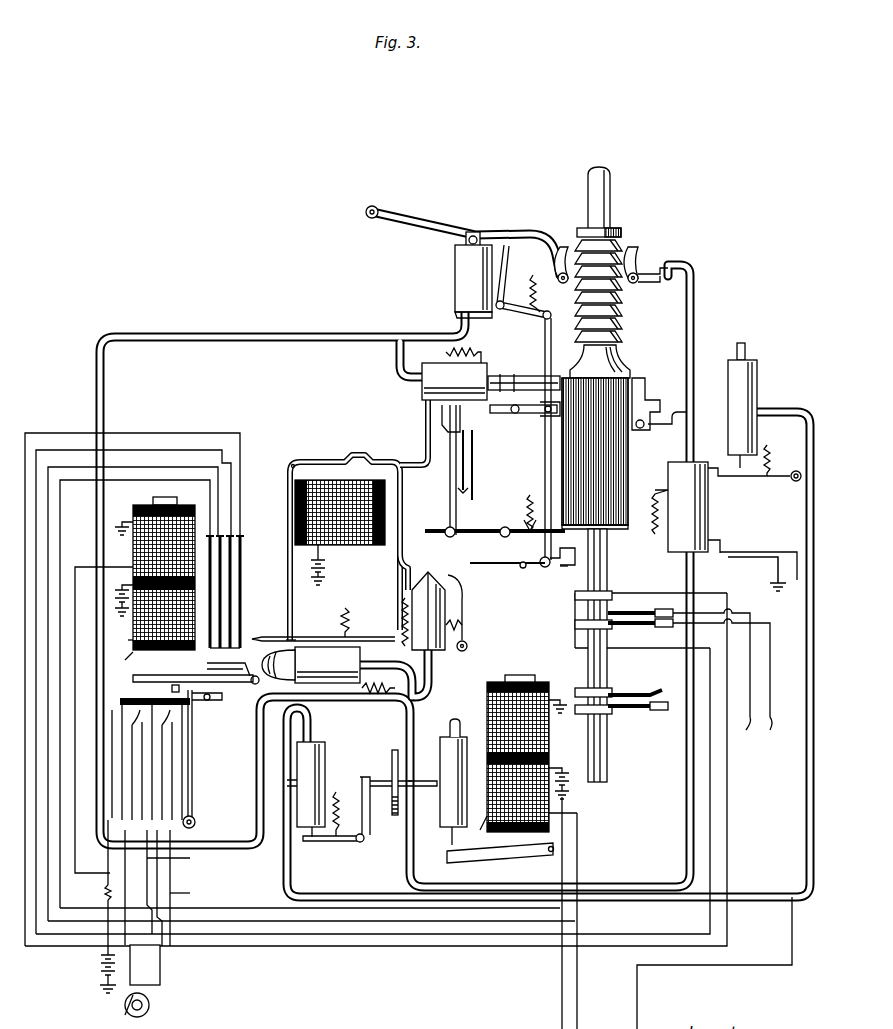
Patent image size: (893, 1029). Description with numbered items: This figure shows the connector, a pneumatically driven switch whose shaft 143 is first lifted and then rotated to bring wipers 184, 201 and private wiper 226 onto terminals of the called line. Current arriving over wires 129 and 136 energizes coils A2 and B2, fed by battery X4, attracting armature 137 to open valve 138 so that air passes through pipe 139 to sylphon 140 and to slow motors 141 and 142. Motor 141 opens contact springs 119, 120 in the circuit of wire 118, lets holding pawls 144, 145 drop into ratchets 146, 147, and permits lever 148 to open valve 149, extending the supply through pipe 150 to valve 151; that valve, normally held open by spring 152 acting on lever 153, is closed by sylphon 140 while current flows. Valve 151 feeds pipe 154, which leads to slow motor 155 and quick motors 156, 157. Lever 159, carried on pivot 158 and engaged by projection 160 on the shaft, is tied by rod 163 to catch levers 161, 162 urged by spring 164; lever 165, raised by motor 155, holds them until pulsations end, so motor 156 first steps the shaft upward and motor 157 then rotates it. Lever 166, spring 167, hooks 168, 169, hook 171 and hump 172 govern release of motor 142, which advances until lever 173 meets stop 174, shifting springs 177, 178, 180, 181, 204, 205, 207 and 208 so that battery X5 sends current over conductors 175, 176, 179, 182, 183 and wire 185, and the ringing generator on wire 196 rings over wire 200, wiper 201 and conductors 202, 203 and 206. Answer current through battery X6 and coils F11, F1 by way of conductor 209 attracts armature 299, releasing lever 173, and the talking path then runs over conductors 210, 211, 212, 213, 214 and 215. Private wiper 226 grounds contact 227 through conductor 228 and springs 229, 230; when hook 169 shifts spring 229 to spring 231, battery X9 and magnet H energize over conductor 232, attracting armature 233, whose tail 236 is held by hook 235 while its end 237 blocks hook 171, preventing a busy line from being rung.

The conductor 118 is at (638, 990).
The contact spring 119 is at (745, 550).
The contact spring 120 is at (758, 560).
The conductor 129 is at (561, 983).
The conductor 136 is at (578, 993).
The armature 137 is at (492, 858).
The valve 138 is at (448, 737).
The pipe 139 is at (414, 786).
The sylphon 140 is at (393, 750).
The slow motor 141 is at (708, 515).
The slow motor 142 is at (345, 672).
The shaft 143 is at (608, 772).
The holding pawl 144 is at (638, 262).
The holding pawl 145 is at (645, 378).
The ratchet 146 is at (620, 310).
The ratchet 147 is at (629, 450).
The lever 148 is at (745, 479).
The valve 149 is at (758, 375).
The pipe 150 is at (780, 897).
The valve 151 is at (326, 752).
The spring 152 is at (280, 778).
The lever 153 is at (372, 825).
The pipe 154 is at (105, 378).
The slow motor 155 is at (465, 625).
The quick motor 156 is at (453, 275).
The quick motor 157 is at (491, 374).
The pivot 158 is at (515, 568).
The lever 159 is at (557, 569).
The projection 160 is at (558, 552).
The catch lever 161 is at (515, 416).
The catch lever 162 is at (520, 315).
The rod 163 is at (544, 470).
The spring 164 is at (532, 290).
The lever 165 is at (452, 600).
The lever 166 is at (515, 519).
The spring 167 is at (516, 511).
The hook 168 is at (448, 430).
The hook 169 is at (440, 413).
The hook 171 is at (323, 624).
The hump 172 is at (399, 563).
The lever 173 is at (193, 721).
The stop 174 is at (217, 667).
The conductor 175 is at (108, 922).
The conductor 176 is at (105, 893).
The contact spring 177 is at (110, 733).
The contact spring 178 is at (150, 693).
The conductor 179 is at (185, 828).
The contact spring 180 is at (175, 808).
The contact spring 181 is at (165, 792).
The conductor 182 is at (185, 860).
The conductor 183 is at (200, 450).
The wiper 184 is at (636, 624).
The wire 185 is at (748, 728).
The wire 196 is at (162, 985).
The wire 200 is at (757, 748).
The wiper 201 is at (628, 588).
The conductor 202 is at (242, 438).
The conductor 203 is at (178, 893).
The contact spring 204 is at (180, 730).
The contact spring 205 is at (134, 752).
The conductor 206 is at (95, 995).
The contact spring 207 is at (145, 765).
The contact spring 208 is at (155, 778).
The conductor 209 is at (78, 565).
The conductor 210 is at (112, 482).
The conductor 211 is at (212, 553).
The conductor 212 is at (222, 572).
The conductor 213 is at (232, 591).
The conductor 214 is at (242, 612).
The conductor 215 is at (233, 490).
The private wiper 226 is at (620, 700).
The private bank contact 227 is at (668, 712).
The conductor 228 is at (575, 648).
The contact spring 229 is at (462, 485).
The contact spring 230 is at (462, 470).
The contact spring 231 is at (475, 452).
The conductor 232 is at (480, 548).
The armature 233 is at (288, 530).
The hook 235 is at (422, 443).
The tail 236 is at (357, 458).
The end 237 is at (288, 600).
The armature 299 is at (179, 677).
The coil of magnet F—F' F11 is at (136, 548).
The coil of magnet F—F' F1 is at (130, 630).
The battery X6 is at (118, 592).
The battery X9 is at (326, 565).
The battery X4 is at (572, 790).
The battery X5 is at (96, 973).
The coil B² B2 is at (487, 712).
The coil A² A2 is at (478, 831).
The magnet H is at (340, 504).